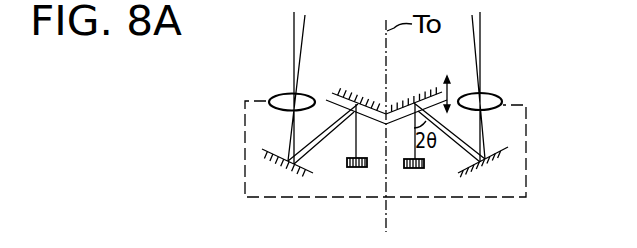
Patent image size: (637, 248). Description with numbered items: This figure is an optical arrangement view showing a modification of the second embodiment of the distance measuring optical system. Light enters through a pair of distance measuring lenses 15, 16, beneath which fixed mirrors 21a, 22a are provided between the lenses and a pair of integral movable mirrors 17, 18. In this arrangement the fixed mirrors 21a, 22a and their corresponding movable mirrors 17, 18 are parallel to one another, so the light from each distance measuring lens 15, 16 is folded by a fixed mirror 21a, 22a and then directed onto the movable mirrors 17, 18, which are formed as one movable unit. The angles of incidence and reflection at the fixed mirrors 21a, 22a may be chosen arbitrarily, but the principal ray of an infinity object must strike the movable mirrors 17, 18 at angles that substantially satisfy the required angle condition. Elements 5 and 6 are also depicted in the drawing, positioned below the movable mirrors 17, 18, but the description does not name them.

The distance measuring lens 15 is at (497, 93).
The distance measuring lens 16 is at (285, 93).
The movable mirror 17 is at (417, 92).
The movable mirror 18 is at (355, 93).
The photodetector 5 is at (424, 169).
The photodetector 6 is at (349, 168).
The fixed mirror 21a is at (487, 162).
The fixed mirror 22a is at (273, 160).